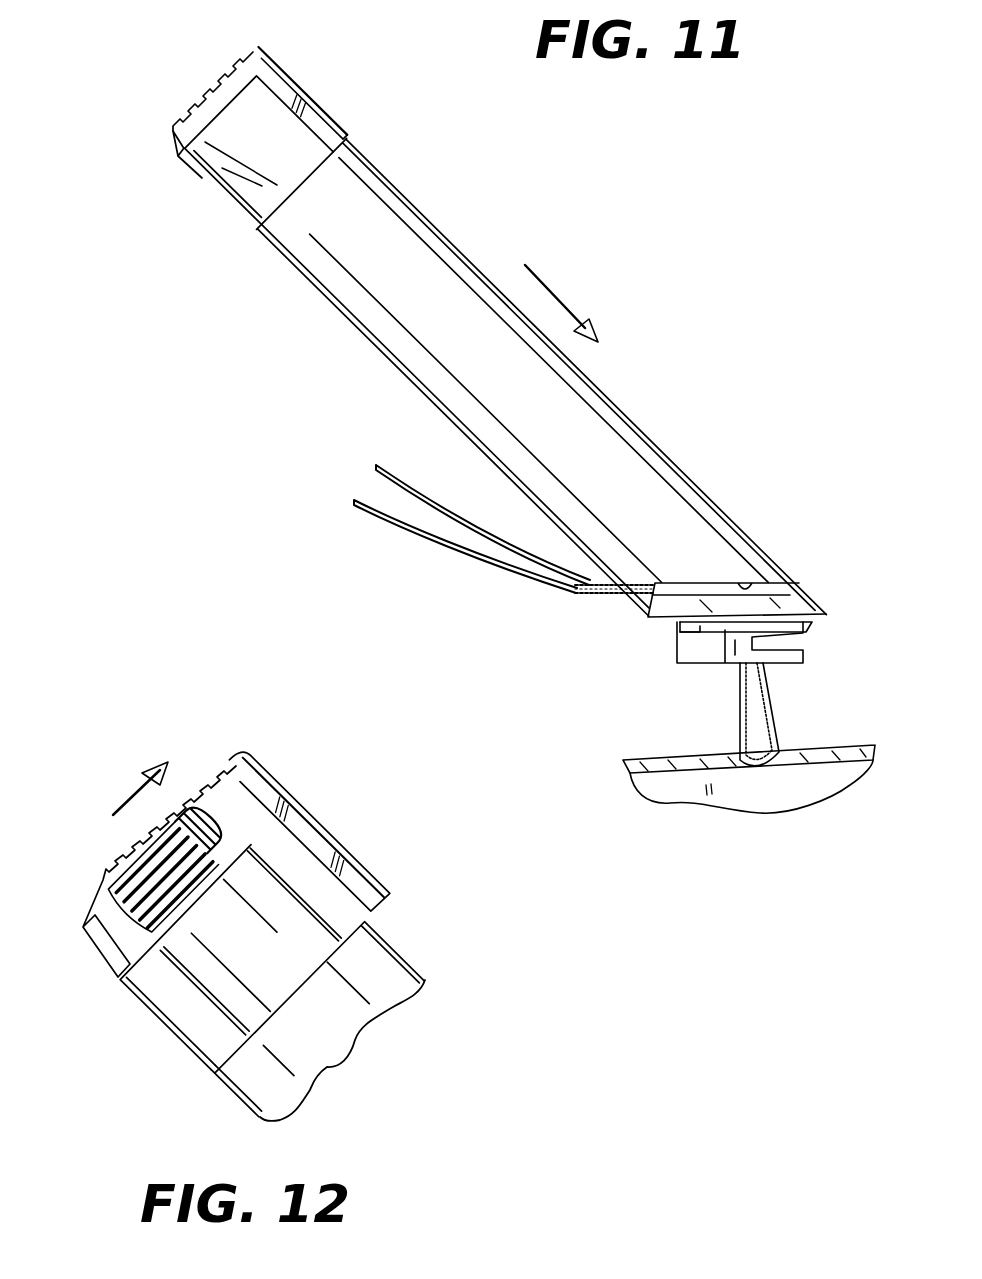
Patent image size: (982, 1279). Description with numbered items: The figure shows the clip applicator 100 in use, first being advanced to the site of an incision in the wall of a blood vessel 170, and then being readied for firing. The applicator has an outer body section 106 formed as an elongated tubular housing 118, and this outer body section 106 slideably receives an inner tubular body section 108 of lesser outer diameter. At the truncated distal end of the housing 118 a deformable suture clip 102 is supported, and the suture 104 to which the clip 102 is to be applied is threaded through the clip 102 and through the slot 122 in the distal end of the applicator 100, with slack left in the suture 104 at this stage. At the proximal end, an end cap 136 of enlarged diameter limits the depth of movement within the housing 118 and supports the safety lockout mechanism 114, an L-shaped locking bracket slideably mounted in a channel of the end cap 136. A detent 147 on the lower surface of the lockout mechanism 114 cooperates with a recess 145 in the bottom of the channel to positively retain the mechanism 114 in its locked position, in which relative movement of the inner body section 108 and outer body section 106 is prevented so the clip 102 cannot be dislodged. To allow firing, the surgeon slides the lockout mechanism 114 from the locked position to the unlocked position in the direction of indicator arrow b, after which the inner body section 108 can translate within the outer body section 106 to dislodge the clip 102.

In FIG. 11, the clip applicator 100 is at (639, 288).
In FIG. 11, the deformable suture clip 102 is at (676, 646).
In FIG. 11, the suture 104 is at (777, 718).
In FIG. 11, the outer body section 106 is at (392, 222).
In FIG. 12, the outer body section 106 is at (383, 945).
In FIG. 11, the inner tubular body section 108 is at (262, 173).
In FIG. 12, the inner tubular body section 108 is at (197, 988).
In FIG. 11, the safety lockout mechanism 114 is at (264, 63).
In FIG. 12, the safety lockout mechanism 114 is at (253, 762).
In FIG. 12, the tubular housing 118 is at (360, 1022).
In FIG. 11, the slot 122 is at (748, 582).
In FIG. 11, the end cap 136 is at (185, 158).
In FIG. 12, the recess 145 is at (140, 876).
In FIG. 12, the detent 147 is at (198, 800).
In FIG. 11, the blood vessel 170 is at (790, 753).
In FIG. 12, the indicator arrow b is at (122, 802).